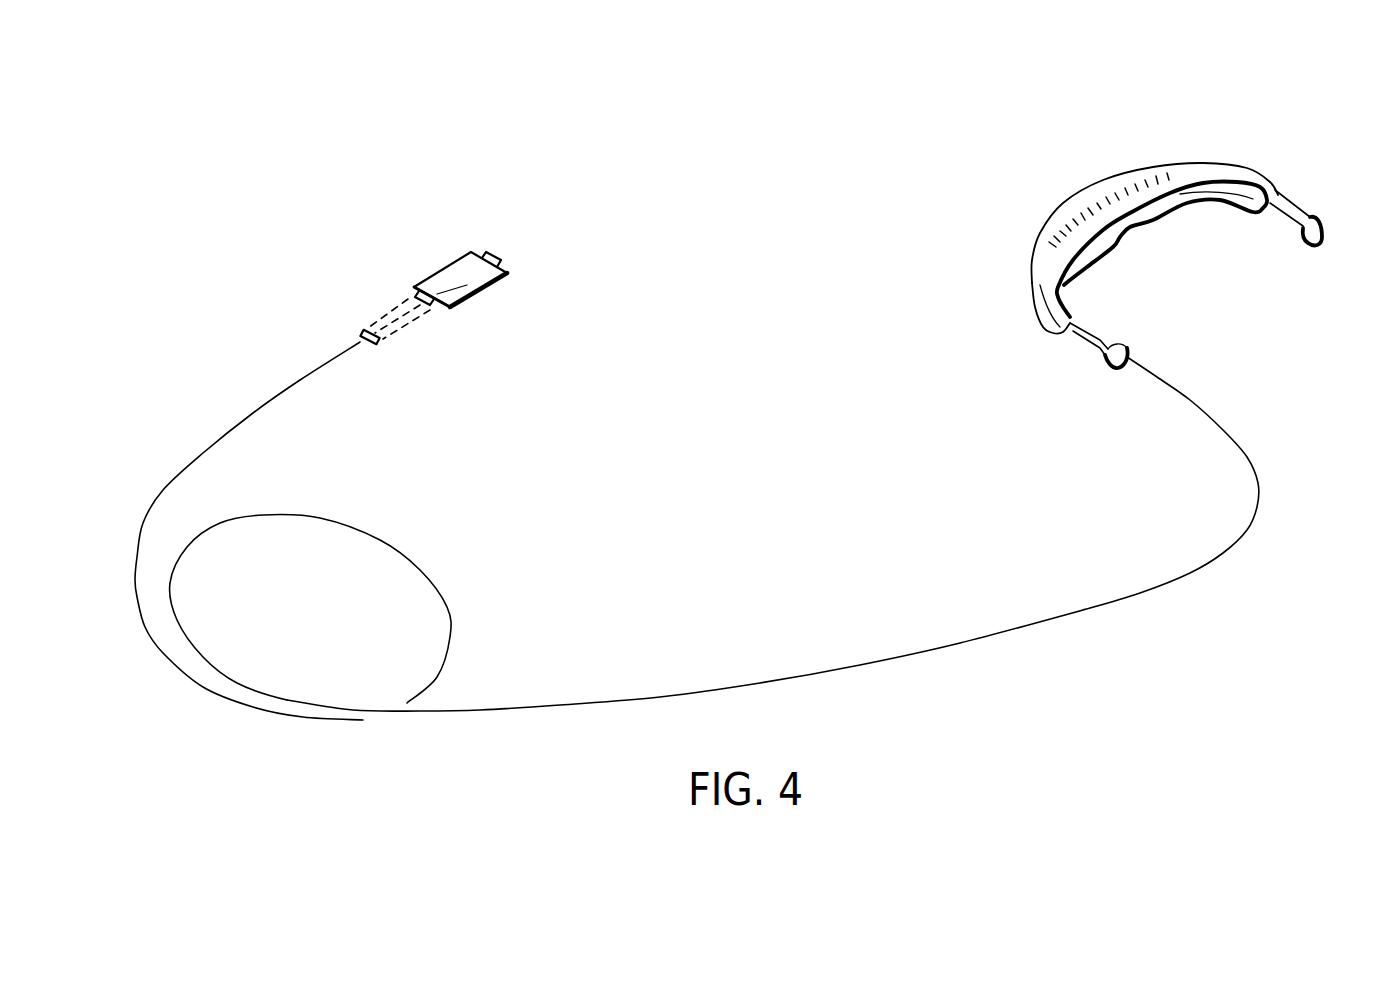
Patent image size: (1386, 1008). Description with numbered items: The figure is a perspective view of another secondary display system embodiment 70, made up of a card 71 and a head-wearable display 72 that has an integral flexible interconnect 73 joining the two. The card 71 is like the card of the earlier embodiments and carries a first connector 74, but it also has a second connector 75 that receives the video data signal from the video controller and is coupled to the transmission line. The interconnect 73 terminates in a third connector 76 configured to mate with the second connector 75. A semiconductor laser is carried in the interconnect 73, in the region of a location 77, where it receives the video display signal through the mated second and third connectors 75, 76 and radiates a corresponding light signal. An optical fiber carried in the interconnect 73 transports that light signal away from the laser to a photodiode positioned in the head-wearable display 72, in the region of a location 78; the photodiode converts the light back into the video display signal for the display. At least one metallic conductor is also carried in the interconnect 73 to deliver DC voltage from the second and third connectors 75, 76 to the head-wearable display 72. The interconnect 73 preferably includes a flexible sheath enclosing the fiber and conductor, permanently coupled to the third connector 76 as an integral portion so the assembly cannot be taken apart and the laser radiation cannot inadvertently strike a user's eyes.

The display system 70 is at (1142, 638).
The card 71 is at (485, 293).
The head-wearable display 72 is at (1205, 160).
The flexible interconnect 73 is at (440, 590).
The first connector 74 is at (500, 253).
The second connector 75 is at (442, 308).
The third connector 76 is at (360, 330).
The location 77 is at (375, 347).
The location 78 is at (1100, 367).